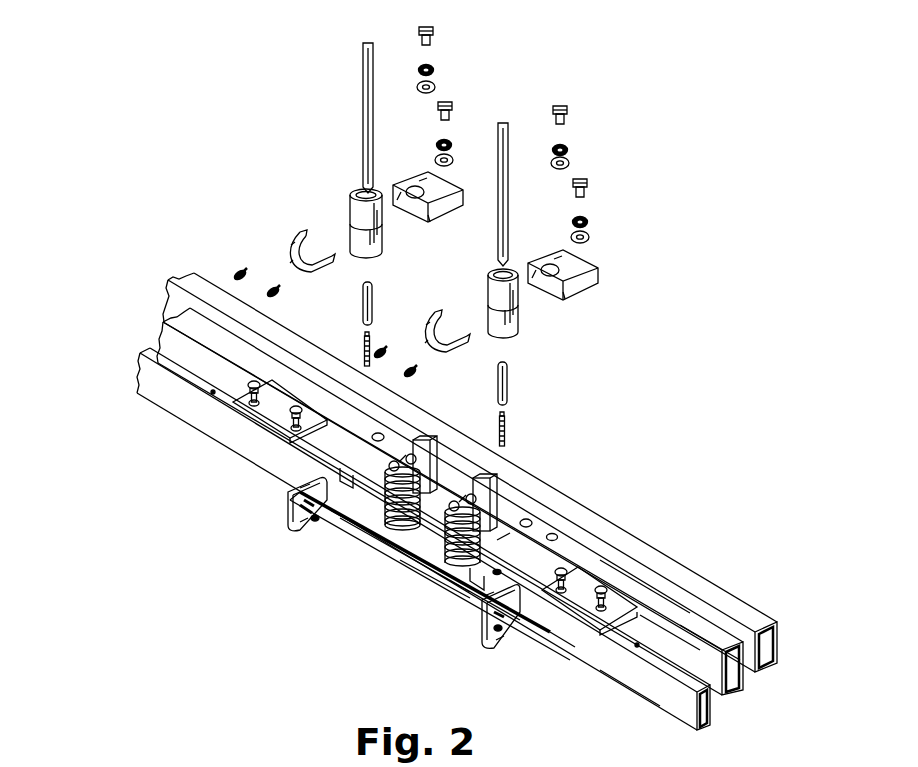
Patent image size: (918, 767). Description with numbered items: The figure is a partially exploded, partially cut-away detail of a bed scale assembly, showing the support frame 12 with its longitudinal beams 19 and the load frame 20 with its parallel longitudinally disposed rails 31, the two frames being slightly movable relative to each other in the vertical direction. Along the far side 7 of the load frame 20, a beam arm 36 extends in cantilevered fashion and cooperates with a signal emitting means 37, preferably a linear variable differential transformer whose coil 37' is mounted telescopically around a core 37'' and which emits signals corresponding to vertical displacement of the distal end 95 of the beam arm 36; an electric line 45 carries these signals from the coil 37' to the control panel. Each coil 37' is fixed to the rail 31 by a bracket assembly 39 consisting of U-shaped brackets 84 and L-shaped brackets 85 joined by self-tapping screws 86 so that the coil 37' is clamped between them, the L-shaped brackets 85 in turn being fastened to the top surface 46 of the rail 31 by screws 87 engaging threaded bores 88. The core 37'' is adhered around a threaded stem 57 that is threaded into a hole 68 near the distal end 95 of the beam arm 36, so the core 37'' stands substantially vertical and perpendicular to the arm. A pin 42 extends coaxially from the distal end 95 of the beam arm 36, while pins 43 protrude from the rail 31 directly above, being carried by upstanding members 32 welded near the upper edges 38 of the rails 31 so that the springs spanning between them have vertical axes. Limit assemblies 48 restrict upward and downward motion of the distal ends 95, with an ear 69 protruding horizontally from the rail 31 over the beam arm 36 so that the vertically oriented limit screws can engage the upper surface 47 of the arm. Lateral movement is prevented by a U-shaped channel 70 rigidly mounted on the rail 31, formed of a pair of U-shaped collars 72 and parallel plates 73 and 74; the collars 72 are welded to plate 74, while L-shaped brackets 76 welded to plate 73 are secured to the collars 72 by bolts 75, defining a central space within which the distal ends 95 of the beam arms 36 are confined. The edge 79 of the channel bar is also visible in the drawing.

The far side 7 is at (160, 346).
The support frame 12 is at (212, 290).
The longitudinal beams 19 is at (688, 573).
The load frame 20 is at (160, 337).
The rails 31 is at (736, 625).
The upstanding members 32 is at (440, 462).
The beam arms 36 is at (283, 463).
The signal emitting means 37 is at (437, 277).
The coil 37' is at (437, 265).
The core 37'' is at (435, 343).
The upper edges 38 is at (500, 496).
The bracket assembly 39 is at (450, 183).
The pin 42 is at (461, 580).
The pins 43 is at (440, 467).
The electric line 45 is at (362, 101).
The top surface 46 is at (700, 605).
The upper surface 47 is at (661, 657).
The limit assemblies 48 is at (245, 420).
The threaded stem 57 is at (364, 341).
The hole 68 is at (315, 532).
The ear 69 is at (286, 417).
The U-shaped channel 70 is at (370, 560).
The U-shaped collars 72 is at (290, 505).
The plate 73 is at (360, 516).
The plate 74 is at (436, 550).
The bolts 75 is at (302, 530).
The L-shaped brackets 76 is at (309, 490).
The bar edge 79 is at (431, 592).
The U-shaped brackets 84 is at (300, 232).
The L-shaped brackets 85 is at (430, 217).
The self-tapping screws 86 is at (240, 270).
The screws 87 is at (447, 103).
The threaded bores 88 is at (383, 432).
The distal end 95 is at (345, 477).